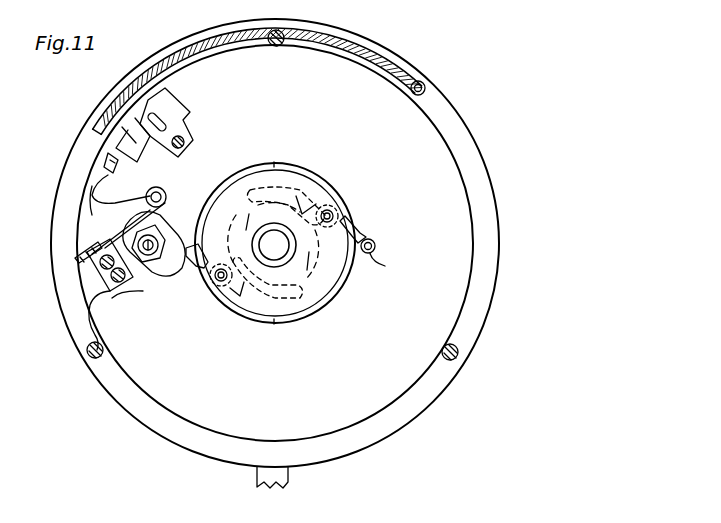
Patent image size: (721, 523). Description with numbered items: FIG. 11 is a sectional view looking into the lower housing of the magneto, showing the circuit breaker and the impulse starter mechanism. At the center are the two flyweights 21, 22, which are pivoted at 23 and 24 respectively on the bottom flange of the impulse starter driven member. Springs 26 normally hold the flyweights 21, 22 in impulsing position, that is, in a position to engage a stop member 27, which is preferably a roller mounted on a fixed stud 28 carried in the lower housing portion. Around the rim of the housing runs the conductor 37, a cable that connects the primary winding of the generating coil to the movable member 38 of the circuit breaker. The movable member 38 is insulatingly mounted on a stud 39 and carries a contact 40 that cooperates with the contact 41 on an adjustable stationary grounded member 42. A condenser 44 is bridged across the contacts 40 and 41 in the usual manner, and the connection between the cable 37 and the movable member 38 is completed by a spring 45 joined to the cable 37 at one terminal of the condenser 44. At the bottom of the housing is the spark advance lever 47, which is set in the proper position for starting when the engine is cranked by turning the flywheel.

The flyweight 21 is at (195, 266).
The flyweight 22 is at (357, 232).
The pivot 23 is at (220, 283).
The pivot 24 is at (333, 212).
The springs 26 is at (298, 200).
The stop member 27 is at (375, 243).
The fixed stud 28 is at (385, 266).
The conductor 37 is at (379, 68).
The movable member 38 is at (162, 180).
The stud 39 is at (167, 189).
The contact 40 is at (85, 258).
The contact 41 is at (95, 272).
The adjustable stationary grounded member 42 is at (90, 302).
The condenser 44 is at (173, 108).
The spring 45 is at (92, 186).
The spark advance lever 47 is at (288, 478).